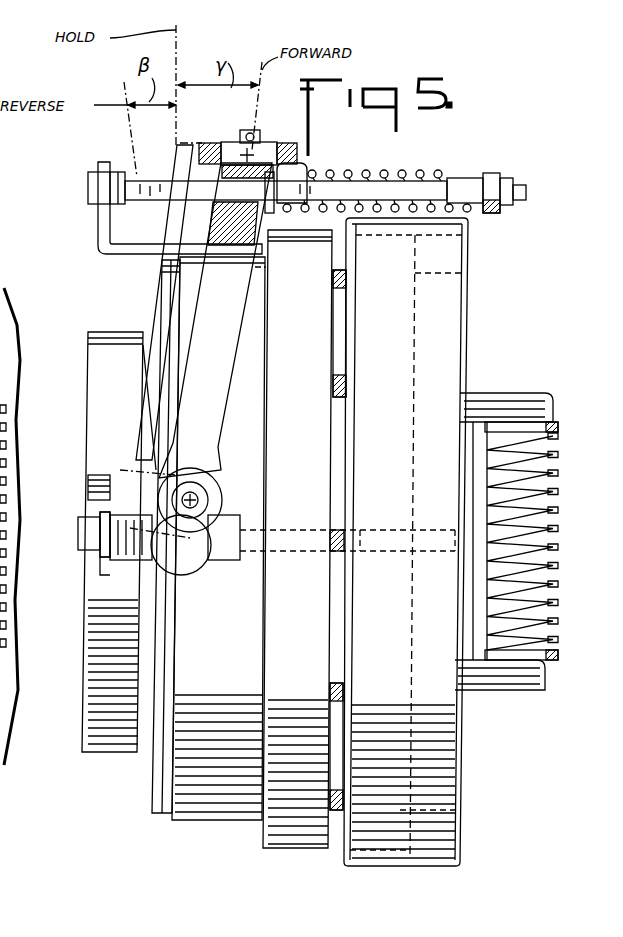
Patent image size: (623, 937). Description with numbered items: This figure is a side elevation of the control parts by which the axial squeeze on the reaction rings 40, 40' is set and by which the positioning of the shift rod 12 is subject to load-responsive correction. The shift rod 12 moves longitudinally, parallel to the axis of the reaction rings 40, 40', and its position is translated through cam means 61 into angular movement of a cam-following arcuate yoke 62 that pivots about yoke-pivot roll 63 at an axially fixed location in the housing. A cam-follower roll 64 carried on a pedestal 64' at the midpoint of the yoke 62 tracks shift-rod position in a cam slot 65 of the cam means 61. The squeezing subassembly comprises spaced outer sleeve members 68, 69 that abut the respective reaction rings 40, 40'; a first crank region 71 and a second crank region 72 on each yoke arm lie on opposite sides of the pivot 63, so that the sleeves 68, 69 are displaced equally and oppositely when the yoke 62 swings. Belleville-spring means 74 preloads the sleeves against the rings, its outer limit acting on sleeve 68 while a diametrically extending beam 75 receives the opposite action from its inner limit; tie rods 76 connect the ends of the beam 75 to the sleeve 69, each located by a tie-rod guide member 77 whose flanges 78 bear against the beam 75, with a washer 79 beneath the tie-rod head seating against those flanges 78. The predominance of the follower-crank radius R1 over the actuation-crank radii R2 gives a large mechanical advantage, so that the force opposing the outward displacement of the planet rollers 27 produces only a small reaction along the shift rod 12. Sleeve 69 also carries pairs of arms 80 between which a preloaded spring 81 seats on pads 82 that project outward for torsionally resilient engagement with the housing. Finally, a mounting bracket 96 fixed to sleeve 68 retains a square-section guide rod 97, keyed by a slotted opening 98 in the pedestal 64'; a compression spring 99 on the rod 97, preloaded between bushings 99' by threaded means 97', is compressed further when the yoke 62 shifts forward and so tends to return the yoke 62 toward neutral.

The shift rod 12 is at (172, 142).
The planet rollers 27 is at (333, 352).
The reaction ring 40 is at (297, 560).
The reaction ring 40' is at (405, 859).
The cam means 61 is at (200, 145).
The arcuate yoke 62 is at (233, 394).
The yoke-pivot roll 63 is at (210, 497).
The cam-follower roll 64 is at (247, 138).
The pedestal 64' is at (284, 225).
The cam slot 65 is at (281, 143).
The outer sleeve member 68 is at (208, 807).
The outer sleeve member 69 is at (390, 620).
The first crank region 71 is at (222, 481).
The second crank region 72 is at (195, 573).
The Belleville-spring means 74 is at (150, 780).
The beam 75 is at (100, 384).
The tie rod 76 is at (80, 533).
The tie-rod guide member 77 is at (218, 565).
The flanges 78 is at (100, 565).
The washer 79 is at (88, 563).
The arms 80 is at (548, 401).
The spring 81 is at (556, 506).
The pad 82 is at (558, 427).
The mounting bracket 96 is at (98, 228).
The guide rod 97 is at (267, 201).
The threaded means 97' is at (504, 172).
The slotted opening 98 is at (222, 180).
The compression spring 99 is at (383, 175).
The bushings 99' is at (378, 167).
The follower-crank radius R1 is at (147, 415).
The actuation-crank radii R2 is at (162, 487).